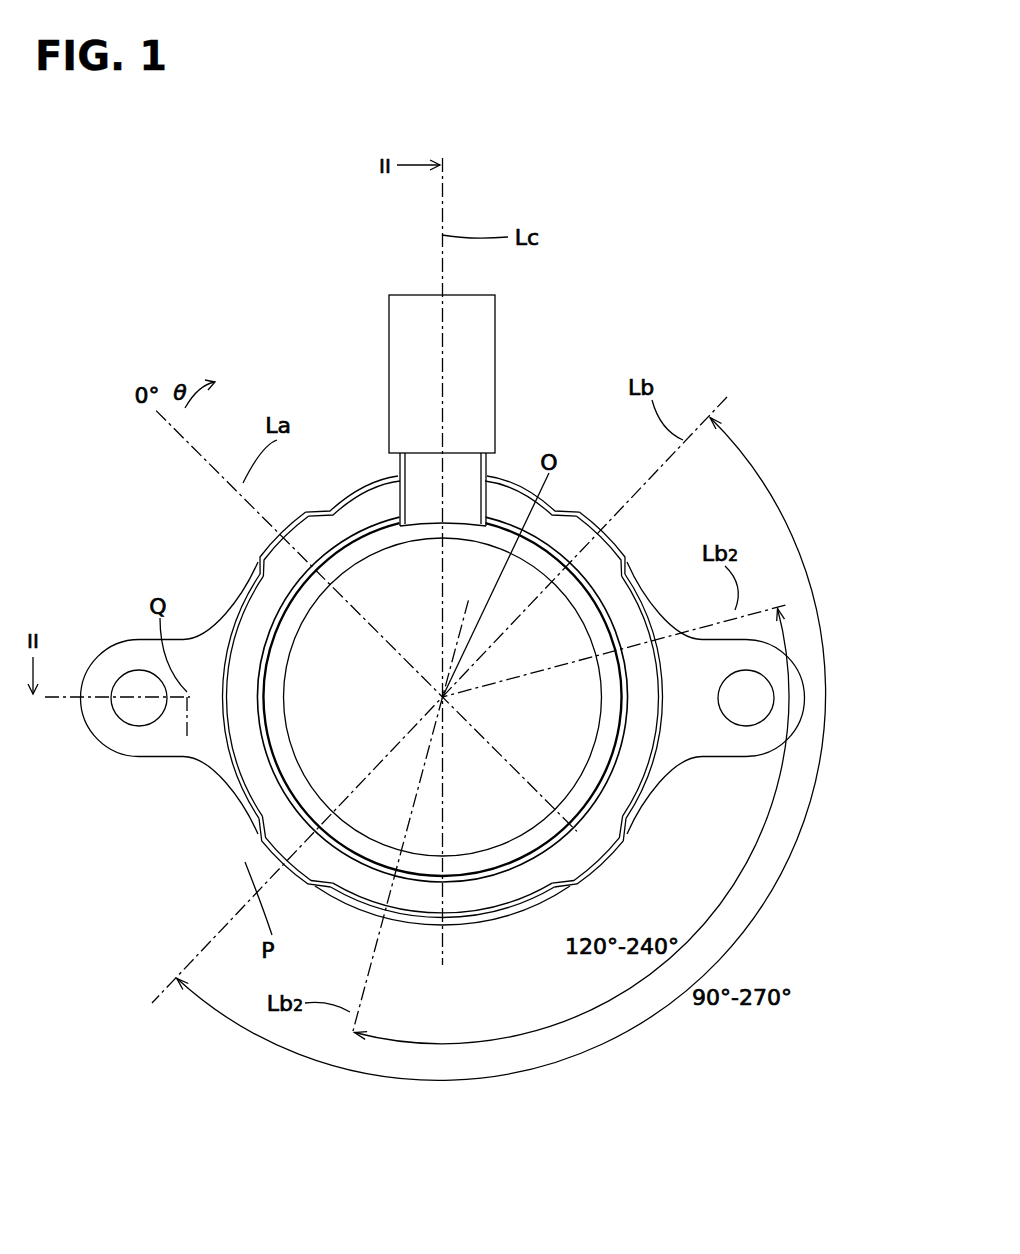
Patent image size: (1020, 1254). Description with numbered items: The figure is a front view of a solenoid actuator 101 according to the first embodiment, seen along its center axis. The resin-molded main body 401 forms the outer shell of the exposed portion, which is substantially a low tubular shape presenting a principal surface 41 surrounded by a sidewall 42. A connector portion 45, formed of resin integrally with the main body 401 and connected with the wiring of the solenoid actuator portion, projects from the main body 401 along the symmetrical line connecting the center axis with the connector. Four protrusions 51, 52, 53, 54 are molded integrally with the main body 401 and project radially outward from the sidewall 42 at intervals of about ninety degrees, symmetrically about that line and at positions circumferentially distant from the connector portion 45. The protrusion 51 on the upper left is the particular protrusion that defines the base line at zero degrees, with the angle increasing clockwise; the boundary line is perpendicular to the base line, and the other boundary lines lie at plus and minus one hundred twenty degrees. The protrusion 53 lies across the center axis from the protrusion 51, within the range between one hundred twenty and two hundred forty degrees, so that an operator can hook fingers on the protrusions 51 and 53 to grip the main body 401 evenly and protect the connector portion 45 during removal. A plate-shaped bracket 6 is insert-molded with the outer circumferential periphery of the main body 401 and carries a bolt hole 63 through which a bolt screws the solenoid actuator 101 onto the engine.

The solenoid actuator 101 is at (270, 372).
The principal surface 41 is at (340, 705).
The sidewall 42 is at (510, 918).
The main body 401 is at (370, 518).
The connector portion 45 is at (487, 322).
The protrusion 51 is at (282, 556).
The protrusion 52 is at (582, 530).
The protrusion 53 is at (612, 840).
The protrusion 54 is at (302, 868).
The bracket 6 is at (103, 643).
The bolt hole 63 is at (137, 723).